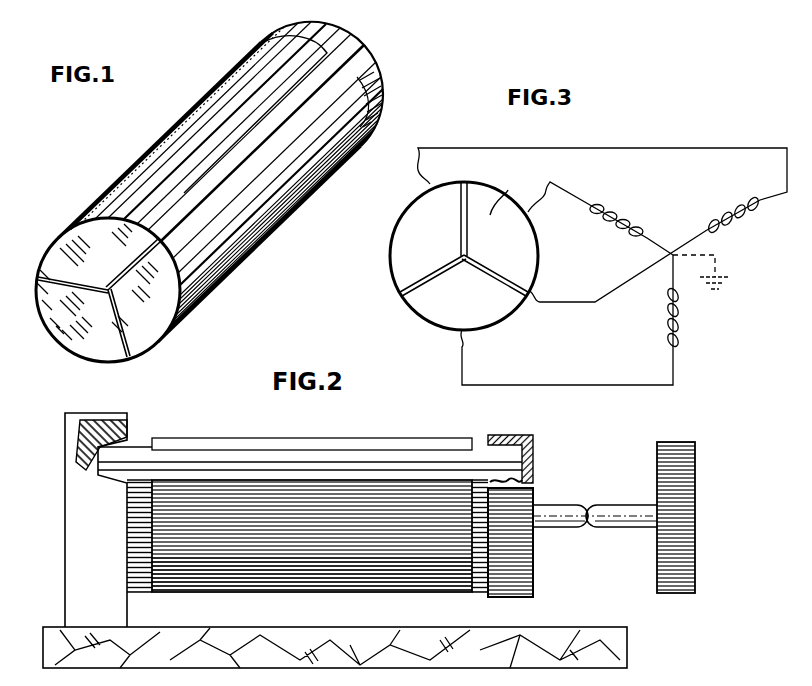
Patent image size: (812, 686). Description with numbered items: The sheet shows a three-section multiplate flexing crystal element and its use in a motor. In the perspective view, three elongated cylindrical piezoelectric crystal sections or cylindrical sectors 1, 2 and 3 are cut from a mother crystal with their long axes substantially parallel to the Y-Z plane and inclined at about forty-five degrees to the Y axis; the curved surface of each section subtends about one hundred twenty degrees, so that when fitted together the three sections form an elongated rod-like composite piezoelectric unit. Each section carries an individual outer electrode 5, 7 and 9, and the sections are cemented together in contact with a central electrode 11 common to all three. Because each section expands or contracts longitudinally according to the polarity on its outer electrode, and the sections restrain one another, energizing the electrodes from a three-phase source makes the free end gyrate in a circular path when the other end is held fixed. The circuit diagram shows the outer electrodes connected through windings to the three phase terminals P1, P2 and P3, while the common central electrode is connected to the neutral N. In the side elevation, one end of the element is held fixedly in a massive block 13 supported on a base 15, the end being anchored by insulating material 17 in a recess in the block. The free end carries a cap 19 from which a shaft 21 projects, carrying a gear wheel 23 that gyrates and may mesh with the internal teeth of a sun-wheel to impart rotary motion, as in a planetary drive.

In FIG. 1, the cylindrical sector 1 is at (78, 243).
In FIG. 3, the cylindrical sector 1 is at (400, 258).
In FIG. 2, the cylindrical sector 1 is at (310, 519).
In FIG. 1, the cylindrical sector 2 is at (135, 343).
In FIG. 3, the cylindrical sector 2 is at (493, 217).
In FIG. 1, the cylindrical sector 3 is at (45, 277).
In FIG. 3, the cylindrical sector 3 is at (430, 300).
In FIG. 1, the outer electrode 5 is at (168, 132).
In FIG. 3, the outer electrode 5 is at (397, 220).
In FIG. 1, the outer electrode 7 is at (240, 267).
In FIG. 3, the outer electrode 7 is at (487, 190).
In FIG. 1, the outer electrode 9 is at (45, 327).
In FIG. 3, the outer electrode 9 is at (502, 320).
In FIG. 1, the central electrode 11 is at (362, 42).
In FIG. 3, the central electrode 11 is at (402, 293).
In FIG. 2, the massive block 13 is at (80, 517).
In FIG. 2, the base 15 is at (55, 645).
In FIG. 2, the insulating material 17 is at (132, 443).
In FIG. 2, the cap 19 is at (533, 455).
In FIG. 2, the shaft 21 is at (555, 505).
In FIG. 2, the gear wheel 23 is at (695, 450).
In FIG. 3, the phase terminal P1 is at (602, 181).
In FIG. 3, the phase terminal P2 is at (600, 213).
In FIG. 3, the phase terminal P3 is at (571, 321).
In FIG. 3, the neutral terminal N is at (618, 267).